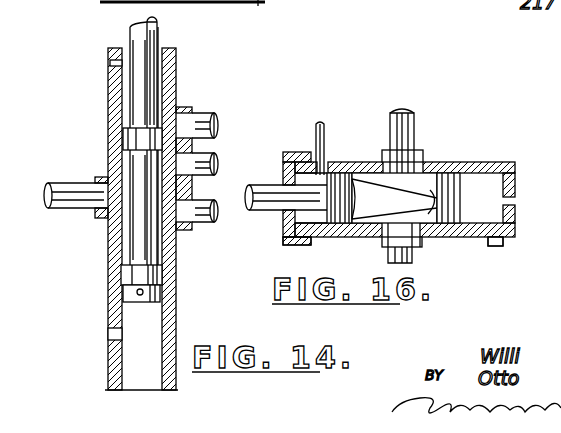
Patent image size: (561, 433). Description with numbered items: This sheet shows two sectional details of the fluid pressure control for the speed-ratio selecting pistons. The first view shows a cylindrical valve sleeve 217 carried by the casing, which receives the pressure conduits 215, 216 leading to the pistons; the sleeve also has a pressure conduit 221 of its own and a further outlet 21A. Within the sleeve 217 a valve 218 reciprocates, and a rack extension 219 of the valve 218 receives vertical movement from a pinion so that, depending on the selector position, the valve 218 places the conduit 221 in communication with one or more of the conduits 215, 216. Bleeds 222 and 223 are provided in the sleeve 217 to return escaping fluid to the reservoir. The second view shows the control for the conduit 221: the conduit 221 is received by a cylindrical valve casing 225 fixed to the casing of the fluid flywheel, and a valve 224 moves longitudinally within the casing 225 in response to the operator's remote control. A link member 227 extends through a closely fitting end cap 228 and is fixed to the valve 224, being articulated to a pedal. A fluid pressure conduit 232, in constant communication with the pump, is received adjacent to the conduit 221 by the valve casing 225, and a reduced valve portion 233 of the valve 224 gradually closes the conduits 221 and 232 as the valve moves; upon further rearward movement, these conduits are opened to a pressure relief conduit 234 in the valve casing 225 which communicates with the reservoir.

In FIG. 14, the valve sleeve 217 is at (178, 62).
In FIG. 14, the valve 218 is at (125, 250).
In FIG. 16, the valve 218 is at (416, 189).
In FIG. 14, the rack extension 219 is at (158, 34).
In FIG. 14, the pressure conduit 221 is at (72, 198).
In FIG. 16, the pressure conduit 221 is at (416, 124).
In FIG. 14, the bleed 222 is at (110, 62).
In FIG. 14, the bleed 223 is at (108, 340).
In FIG. 14, the pressure conduit 215 is at (210, 158).
In FIG. 14, the pressure conduit 216 is at (207, 118).
In FIG. 14, the outlet port 21A is at (207, 221).
In FIG. 16, the link member 227 is at (278, 208).
In FIG. 16, the end cap 228 is at (285, 245).
In FIG. 16, the fluid pressure conduit 232 is at (388, 255).
In FIG. 16, the reduced valve portion 233 is at (420, 175).
In FIG. 16, the pressure relief conduit 234 is at (328, 125).
In FIG. 16, the valve 224 is at (430, 238).
In FIG. 16, the valve casing 225 is at (490, 240).